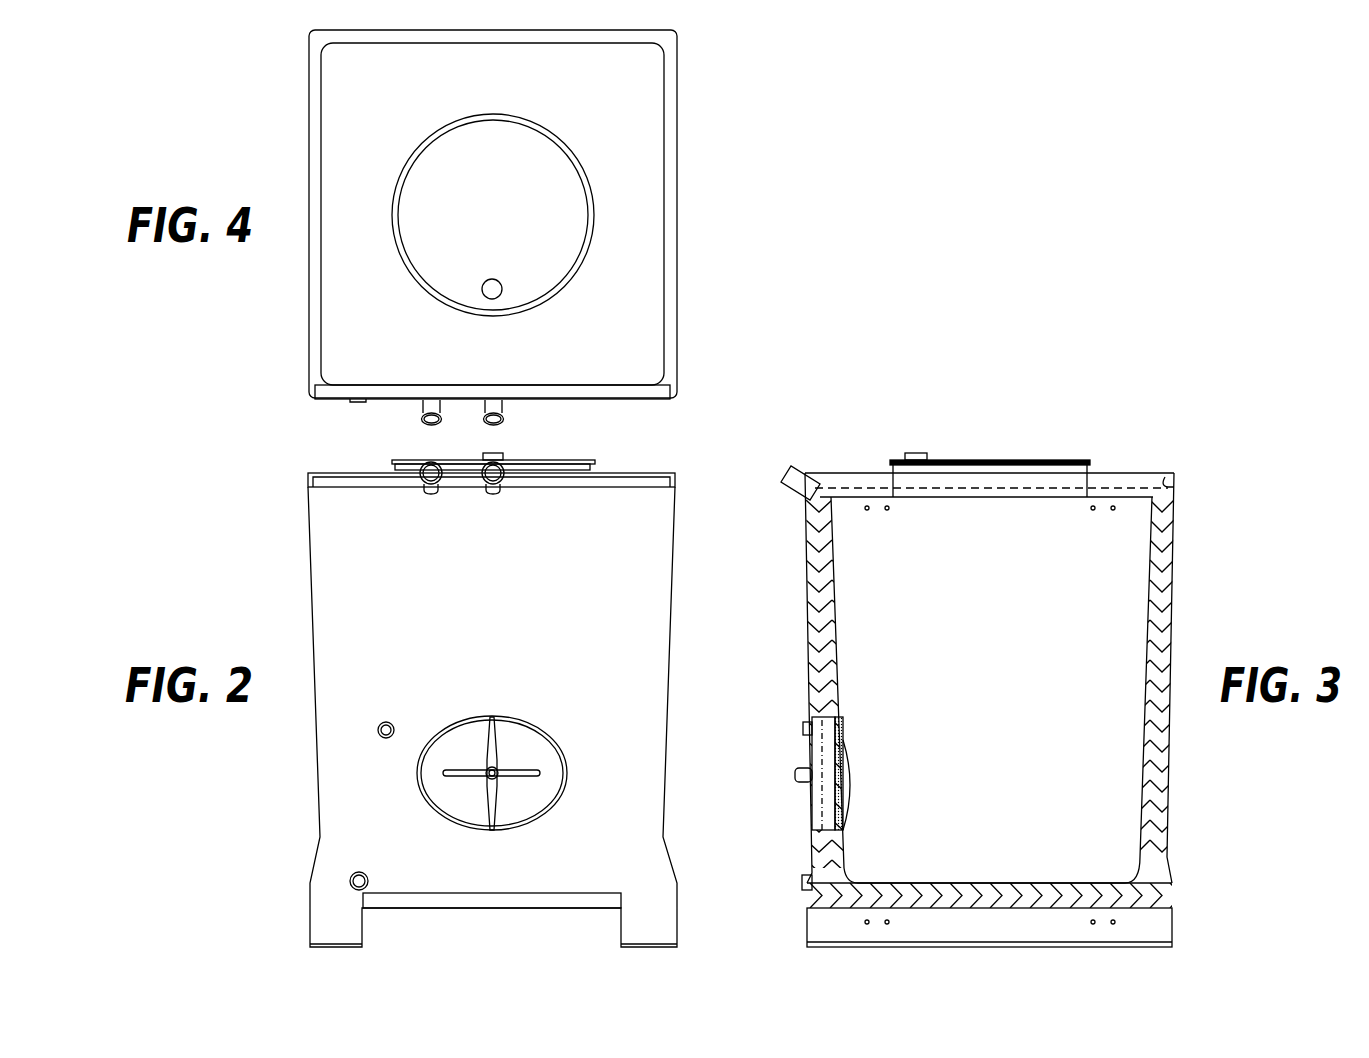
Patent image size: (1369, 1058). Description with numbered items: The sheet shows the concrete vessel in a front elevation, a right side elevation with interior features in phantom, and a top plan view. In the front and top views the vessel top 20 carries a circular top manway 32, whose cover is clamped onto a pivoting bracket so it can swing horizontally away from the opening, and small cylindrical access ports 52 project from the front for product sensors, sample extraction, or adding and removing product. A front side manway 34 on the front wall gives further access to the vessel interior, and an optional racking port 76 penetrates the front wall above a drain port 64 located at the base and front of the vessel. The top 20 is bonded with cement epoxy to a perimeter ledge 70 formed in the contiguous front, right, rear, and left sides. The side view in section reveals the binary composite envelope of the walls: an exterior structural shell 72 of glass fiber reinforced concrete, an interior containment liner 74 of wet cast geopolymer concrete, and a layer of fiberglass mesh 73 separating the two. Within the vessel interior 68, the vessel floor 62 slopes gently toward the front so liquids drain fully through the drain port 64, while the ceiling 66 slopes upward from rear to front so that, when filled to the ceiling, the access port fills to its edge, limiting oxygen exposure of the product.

In FIG. 4, the top 20 is at (640, 62).
In FIG. 2, the top 20 is at (640, 480).
In FIG. 3, the top 20 is at (1105, 472).
In FIG. 4, the perimeter ledge 70 is at (668, 105).
In FIG. 2, the perimeter ledge 70 is at (676, 478).
In FIG. 3, the perimeter ledge 70 is at (1172, 482).
In FIG. 4, the top manway 32 is at (575, 205).
In FIG. 2, the top manway 32 is at (403, 460).
In FIG. 3, the top manway 32 is at (985, 472).
In FIG. 4, the access port 52 is at (505, 405).
In FIG. 2, the access port 52 is at (485, 485).
In FIG. 3, the access port 52 is at (803, 475).
In FIG. 2, the front side manway 34 is at (514, 806).
In FIG. 3, the front side manway 34 is at (812, 770).
In FIG. 2, the racking port 76 is at (378, 730).
In FIG. 3, the racking port 76 is at (803, 728).
In FIG. 2, the drain port 64 is at (350, 882).
In FIG. 3, the drain port 64 is at (803, 881).
In FIG. 3, the ceiling 66 is at (855, 495).
In FIG. 3, the interior containment liner 74 is at (1168, 515).
In FIG. 3, the fiberglass mesh 73 is at (1170, 556).
In FIG. 3, the exterior structural shell 72 is at (1174, 593).
In FIG. 3, the vessel interior 68 is at (1124, 646).
In FIG. 3, the vessel floor 62 is at (1083, 882).